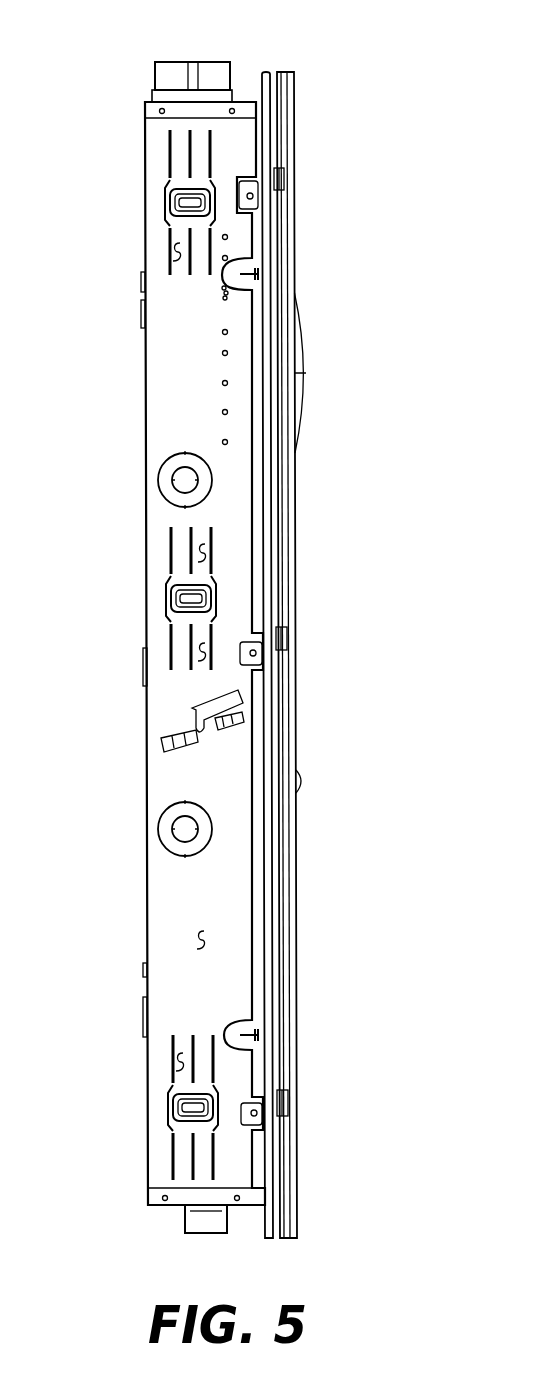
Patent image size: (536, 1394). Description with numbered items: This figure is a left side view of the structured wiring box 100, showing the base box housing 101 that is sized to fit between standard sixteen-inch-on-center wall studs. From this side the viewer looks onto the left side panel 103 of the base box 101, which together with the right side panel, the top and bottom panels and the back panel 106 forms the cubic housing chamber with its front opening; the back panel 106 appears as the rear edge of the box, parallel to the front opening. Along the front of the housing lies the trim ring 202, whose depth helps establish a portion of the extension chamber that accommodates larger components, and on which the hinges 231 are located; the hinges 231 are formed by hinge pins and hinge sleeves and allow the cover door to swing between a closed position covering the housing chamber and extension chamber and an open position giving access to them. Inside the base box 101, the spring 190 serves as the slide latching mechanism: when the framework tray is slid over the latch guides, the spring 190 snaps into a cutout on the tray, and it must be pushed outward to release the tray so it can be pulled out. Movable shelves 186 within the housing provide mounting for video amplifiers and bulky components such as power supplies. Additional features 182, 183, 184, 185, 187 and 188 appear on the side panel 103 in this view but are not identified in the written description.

The structured wiring box 100 is at (260, 646).
The base box housing 101 is at (200, 940).
The left side panel 103 is at (198, 383).
The back panel 106 is at (298, 972).
The spring clip 182 is at (177, 252).
The latch guide 183 is at (168, 617).
The latch 184 is at (180, 198).
The slot 185 is at (168, 658).
The movable shelves 186 is at (217, 573).
The slot 187 is at (195, 537).
The flap 188 is at (240, 702).
The spring 190 is at (187, 715).
The trim ring 202 is at (266, 72).
The hinges 231 is at (283, 180).